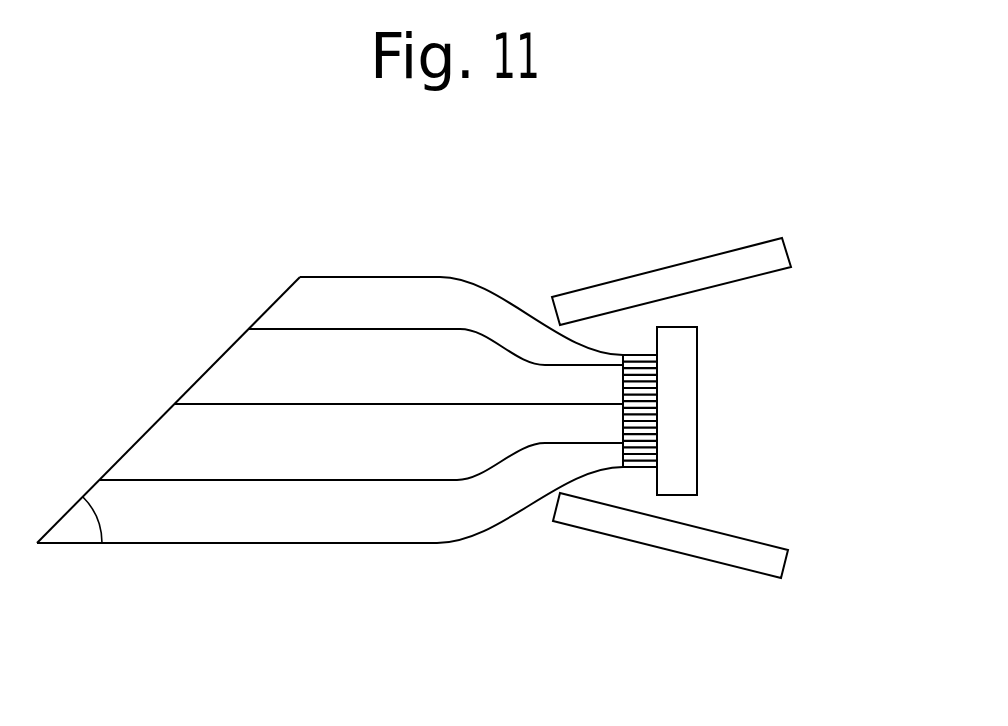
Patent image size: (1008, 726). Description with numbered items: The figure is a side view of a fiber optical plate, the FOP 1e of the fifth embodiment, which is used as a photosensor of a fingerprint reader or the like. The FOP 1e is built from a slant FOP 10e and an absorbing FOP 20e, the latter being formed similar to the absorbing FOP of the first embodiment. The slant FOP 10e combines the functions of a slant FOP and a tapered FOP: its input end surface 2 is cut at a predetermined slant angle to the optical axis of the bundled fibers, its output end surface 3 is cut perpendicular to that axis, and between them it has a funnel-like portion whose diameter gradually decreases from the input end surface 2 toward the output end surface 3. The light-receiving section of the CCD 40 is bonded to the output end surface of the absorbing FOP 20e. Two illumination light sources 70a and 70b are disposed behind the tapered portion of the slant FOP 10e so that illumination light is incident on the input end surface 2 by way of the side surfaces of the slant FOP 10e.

The FOP 1e is at (388, 600).
The input end surface 2 is at (228, 350).
The output end surface 3 is at (623, 423).
The slant FOP 10e is at (353, 277).
The absorbing FOP 20e is at (646, 484).
The CCD 40 is at (690, 420).
The illumination light source 70a is at (653, 270).
The illumination light source 70b is at (637, 543).